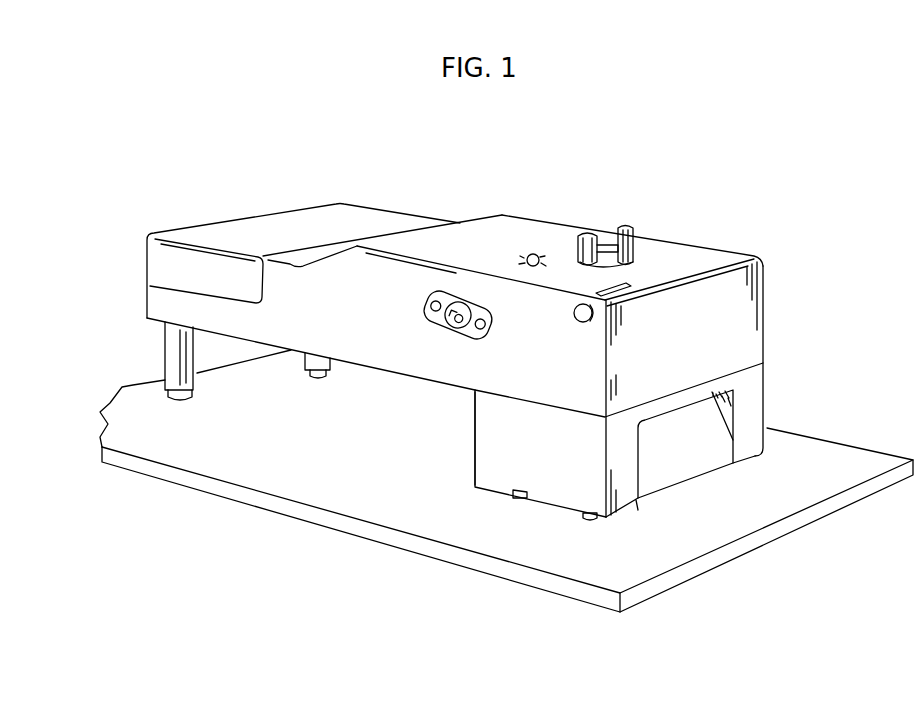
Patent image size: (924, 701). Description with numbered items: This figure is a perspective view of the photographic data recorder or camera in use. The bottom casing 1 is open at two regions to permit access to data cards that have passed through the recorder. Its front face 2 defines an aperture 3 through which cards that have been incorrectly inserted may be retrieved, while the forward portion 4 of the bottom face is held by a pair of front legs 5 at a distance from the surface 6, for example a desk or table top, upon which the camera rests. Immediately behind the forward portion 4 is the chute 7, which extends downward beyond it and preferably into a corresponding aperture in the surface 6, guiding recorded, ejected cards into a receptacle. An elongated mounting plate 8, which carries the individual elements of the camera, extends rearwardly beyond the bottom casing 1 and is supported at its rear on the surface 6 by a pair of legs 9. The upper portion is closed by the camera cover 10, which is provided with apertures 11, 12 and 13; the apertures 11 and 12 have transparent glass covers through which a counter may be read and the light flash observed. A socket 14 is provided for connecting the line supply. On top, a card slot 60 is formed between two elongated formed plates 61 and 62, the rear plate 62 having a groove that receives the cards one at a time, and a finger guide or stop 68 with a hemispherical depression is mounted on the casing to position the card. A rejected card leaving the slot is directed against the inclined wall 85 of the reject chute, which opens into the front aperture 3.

The bottom casing 1 is at (748, 314).
The front face 2 is at (756, 413).
The aperture 3 is at (638, 477).
The forward portion 4 is at (545, 502).
The front legs 5 is at (593, 520).
The surface 6 is at (295, 488).
The chute 7 is at (487, 467).
The elongated mounting plate 8 is at (367, 367).
The legs 9 is at (172, 353).
The camera cover 10 is at (431, 242).
The aperture 11 is at (627, 286).
The aperture 12 is at (528, 255).
The aperture 13 is at (631, 225).
The socket 14 is at (443, 328).
The slot 60 is at (613, 237).
The formed plate 61 is at (627, 228).
The rear plate 62 is at (620, 227).
The finger guide or stop 68 is at (607, 263).
The inclined wall 85 is at (683, 457).